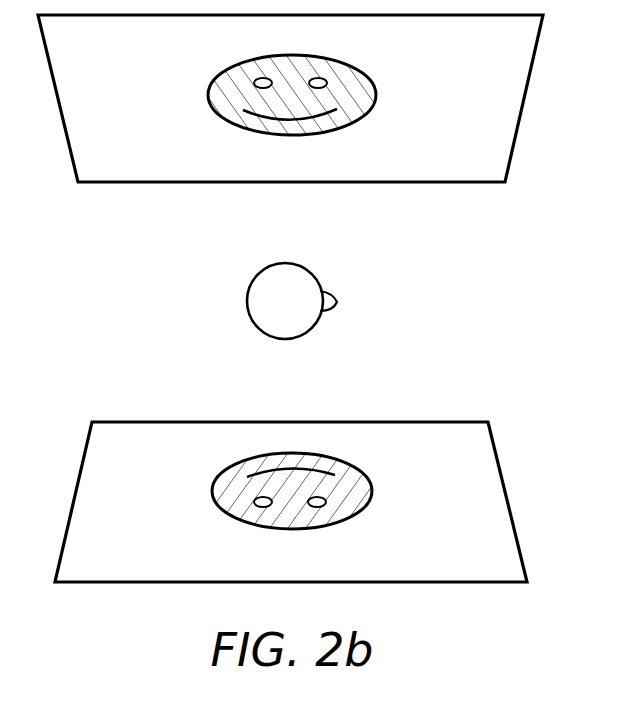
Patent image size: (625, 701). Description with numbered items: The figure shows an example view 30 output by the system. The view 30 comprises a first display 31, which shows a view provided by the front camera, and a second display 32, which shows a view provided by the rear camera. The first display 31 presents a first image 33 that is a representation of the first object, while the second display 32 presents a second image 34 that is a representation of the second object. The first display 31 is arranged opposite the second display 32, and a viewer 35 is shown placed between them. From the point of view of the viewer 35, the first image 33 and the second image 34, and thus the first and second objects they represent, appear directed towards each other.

The view 30 is at (290, 334).
The first display 31 is at (480, 183).
The second display 32 is at (465, 422).
The first image 33 is at (208, 92).
The second image 34 is at (213, 489).
The viewer 35 is at (247, 300).